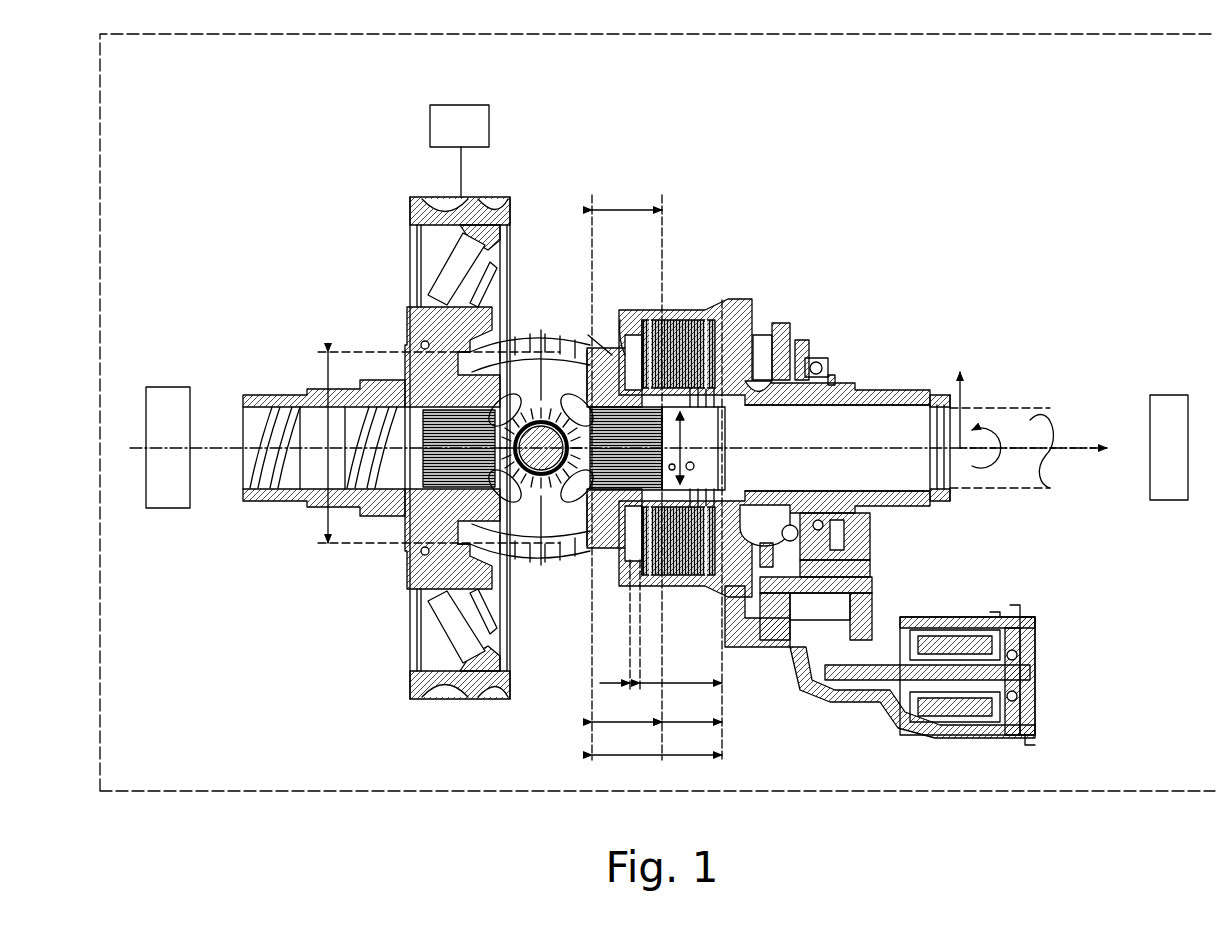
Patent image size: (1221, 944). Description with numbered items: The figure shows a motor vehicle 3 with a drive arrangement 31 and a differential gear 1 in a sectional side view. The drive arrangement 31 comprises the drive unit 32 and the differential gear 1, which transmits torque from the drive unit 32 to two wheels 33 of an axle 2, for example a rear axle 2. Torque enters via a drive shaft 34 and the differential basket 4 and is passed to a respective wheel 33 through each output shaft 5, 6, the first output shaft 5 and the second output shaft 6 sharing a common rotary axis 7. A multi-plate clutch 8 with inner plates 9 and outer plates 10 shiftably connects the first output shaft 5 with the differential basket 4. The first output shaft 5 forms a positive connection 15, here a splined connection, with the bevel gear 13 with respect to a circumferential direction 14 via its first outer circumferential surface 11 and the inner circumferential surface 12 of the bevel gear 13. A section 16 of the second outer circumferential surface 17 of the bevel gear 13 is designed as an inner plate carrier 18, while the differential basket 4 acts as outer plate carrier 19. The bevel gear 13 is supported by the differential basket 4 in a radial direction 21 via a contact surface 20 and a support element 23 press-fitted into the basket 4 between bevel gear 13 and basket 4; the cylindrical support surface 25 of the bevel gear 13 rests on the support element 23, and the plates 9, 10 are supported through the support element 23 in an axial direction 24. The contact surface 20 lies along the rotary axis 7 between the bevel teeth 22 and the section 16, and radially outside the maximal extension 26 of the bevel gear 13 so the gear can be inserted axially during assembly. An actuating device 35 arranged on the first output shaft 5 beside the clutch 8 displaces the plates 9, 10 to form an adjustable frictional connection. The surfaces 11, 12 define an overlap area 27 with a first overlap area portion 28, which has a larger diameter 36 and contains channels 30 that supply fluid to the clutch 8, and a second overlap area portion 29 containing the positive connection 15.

The differential gear 1 is at (766, 178).
The axle 2 is at (1032, 380).
The motor vehicle 3 is at (751, 793).
The differential basket 4 is at (527, 340).
The first output shaft 5 is at (880, 420).
The second output shaft 6 is at (305, 478).
The rotary axis 7 is at (1056, 448).
The multi-plate clutch 8 is at (680, 320).
The inner plates 9 is at (640, 562).
The outer plates 10 is at (680, 562).
The first outer circumferential surface 11 is at (995, 408).
The inner circumferential surface 12 is at (585, 346).
The bevel gear 13 is at (600, 340).
The circumferential direction 14 is at (995, 454).
The positive connection 15 is at (657, 470).
The section 16 is at (661, 633).
The second outer circumferential surface 17 is at (672, 576).
The inner plate carrier 18 is at (600, 532).
The outer plate carrier 19 is at (722, 330).
The contact surface 20 is at (588, 336).
The radial direction 21 is at (960, 395).
The bevel teeth 22 is at (572, 530).
The support element 23 is at (776, 320).
The axial direction 24 is at (1039, 465).
The support surface 25 is at (800, 360).
The maximal extension 26 is at (326, 372).
The overlap area 27 is at (657, 769).
The first overlap area portion 28 is at (692, 738).
The second overlap area portion 29 is at (627, 738).
The channels 30 is at (720, 402).
The drive arrangement 31 is at (958, 268).
The drive unit 32 is at (461, 117).
The wheels 33 is at (158, 402).
The drive shaft 34 is at (461, 170).
The actuating device 35 is at (907, 582).
The diameter 36 is at (722, 446).